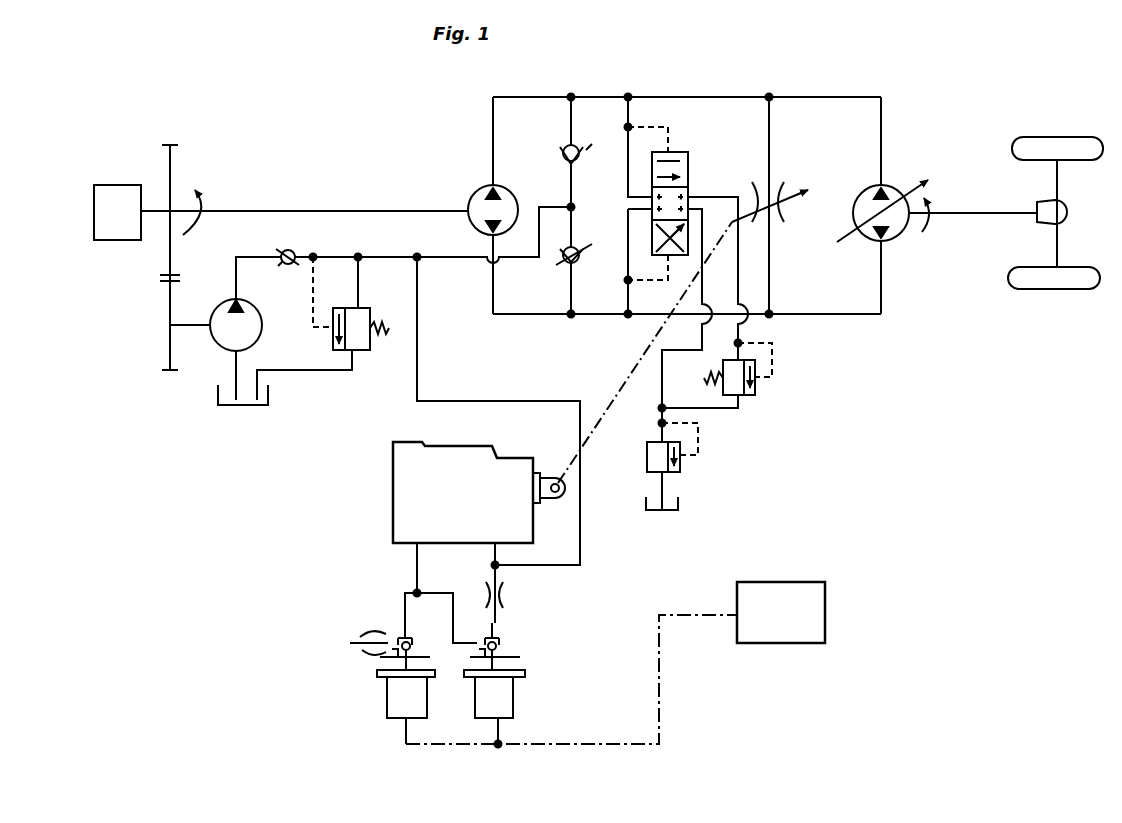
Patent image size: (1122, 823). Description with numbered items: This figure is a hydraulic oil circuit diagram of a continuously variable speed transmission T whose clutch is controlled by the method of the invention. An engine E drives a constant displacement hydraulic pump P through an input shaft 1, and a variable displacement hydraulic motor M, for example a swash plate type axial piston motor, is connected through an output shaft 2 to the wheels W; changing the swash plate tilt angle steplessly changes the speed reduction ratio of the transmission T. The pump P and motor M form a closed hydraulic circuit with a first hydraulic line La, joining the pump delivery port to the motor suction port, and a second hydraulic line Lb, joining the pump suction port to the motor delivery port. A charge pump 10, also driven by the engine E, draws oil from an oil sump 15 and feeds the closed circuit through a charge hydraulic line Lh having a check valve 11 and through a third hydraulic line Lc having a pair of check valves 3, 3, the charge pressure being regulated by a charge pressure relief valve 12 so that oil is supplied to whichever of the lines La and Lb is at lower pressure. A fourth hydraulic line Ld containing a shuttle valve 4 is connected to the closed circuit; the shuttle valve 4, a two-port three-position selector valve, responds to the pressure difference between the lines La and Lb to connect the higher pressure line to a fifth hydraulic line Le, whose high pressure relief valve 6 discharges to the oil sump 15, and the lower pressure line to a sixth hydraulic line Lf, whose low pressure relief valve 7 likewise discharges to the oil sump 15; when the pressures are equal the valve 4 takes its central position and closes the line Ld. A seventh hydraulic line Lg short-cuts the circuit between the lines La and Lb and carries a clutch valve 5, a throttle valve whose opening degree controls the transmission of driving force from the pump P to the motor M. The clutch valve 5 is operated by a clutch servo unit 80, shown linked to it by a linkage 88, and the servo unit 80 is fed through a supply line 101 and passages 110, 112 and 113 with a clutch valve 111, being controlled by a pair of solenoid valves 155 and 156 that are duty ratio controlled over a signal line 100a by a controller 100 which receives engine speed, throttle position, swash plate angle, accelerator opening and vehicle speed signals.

The engine E is at (94, 207).
The input shaft 1 is at (378, 210).
The hydraulic pump P is at (478, 192).
The hydraulic motor M is at (900, 184).
The continuously variable speed transmission T is at (848, 82).
The wheels W is at (1068, 128).
The output shaft 2 is at (992, 212).
The check valves 3 is at (560, 148).
The shuttle valve 4 is at (690, 152).
The clutch valve 5 is at (784, 216).
The high pressure relief valve 6 is at (757, 392).
The low pressure relief valve 7 is at (682, 468).
The charge pump 10 is at (262, 325).
The check valve 11 is at (285, 276).
The charge pressure relief valve 12 is at (367, 307).
The oil sump 15 is at (680, 502).
The clutch servo unit 80 is at (380, 487).
The linkage 88 is at (650, 340).
The controller 100 is at (815, 582).
The control signal line 100a is at (659, 718).
The supply oil line 101 is at (418, 378).
The oil passage 110 is at (497, 553).
The clutch valve 111 is at (502, 608).
The oil passage 112 is at (455, 578).
The oil passage 113 is at (400, 610).
The solenoid valve 155 is at (387, 700).
The solenoid valve 156 is at (513, 700).
The first hydraulic line La is at (537, 314).
The second hydraulic line Lb is at (541, 95).
The third hydraulic line Lc is at (575, 185).
The fourth hydraulic line Ld is at (634, 112).
The fifth hydraulic line Le is at (722, 197).
The sixth hydraulic line Lf is at (662, 372).
The seventh hydraulic line Lg is at (771, 132).
The charge hydraulic line Lh is at (448, 259).